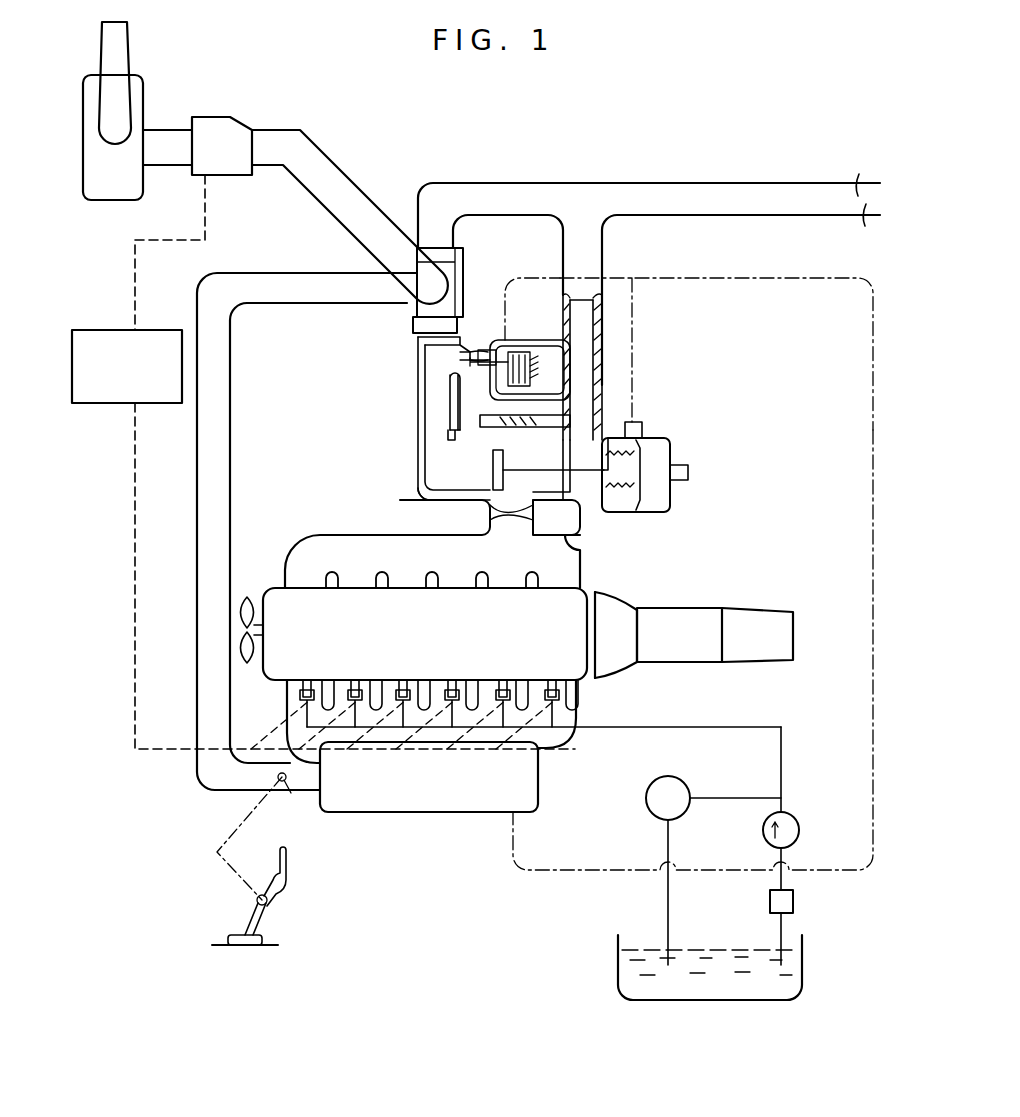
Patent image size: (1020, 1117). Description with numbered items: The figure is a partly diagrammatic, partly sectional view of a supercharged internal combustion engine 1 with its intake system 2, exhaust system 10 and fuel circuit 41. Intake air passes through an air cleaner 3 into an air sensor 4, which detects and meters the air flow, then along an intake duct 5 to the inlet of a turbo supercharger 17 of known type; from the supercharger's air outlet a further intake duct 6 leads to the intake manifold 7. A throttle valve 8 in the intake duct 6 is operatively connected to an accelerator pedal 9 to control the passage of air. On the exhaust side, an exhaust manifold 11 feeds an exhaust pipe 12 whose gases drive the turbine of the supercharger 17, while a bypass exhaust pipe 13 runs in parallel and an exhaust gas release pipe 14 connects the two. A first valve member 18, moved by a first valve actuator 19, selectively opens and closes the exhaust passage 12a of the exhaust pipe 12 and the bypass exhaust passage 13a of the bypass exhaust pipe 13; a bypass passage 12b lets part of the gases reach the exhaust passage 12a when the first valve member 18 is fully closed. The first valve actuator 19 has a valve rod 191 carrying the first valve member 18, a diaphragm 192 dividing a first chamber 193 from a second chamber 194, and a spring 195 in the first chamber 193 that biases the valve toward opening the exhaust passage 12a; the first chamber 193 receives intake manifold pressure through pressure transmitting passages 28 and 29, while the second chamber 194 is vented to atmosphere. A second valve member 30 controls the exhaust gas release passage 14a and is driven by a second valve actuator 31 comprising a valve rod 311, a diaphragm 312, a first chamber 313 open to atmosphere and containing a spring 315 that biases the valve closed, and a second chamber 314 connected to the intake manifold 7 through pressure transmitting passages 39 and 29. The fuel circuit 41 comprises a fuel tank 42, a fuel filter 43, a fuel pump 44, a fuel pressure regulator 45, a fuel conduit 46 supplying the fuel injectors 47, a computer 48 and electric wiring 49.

The supercharged internal combustion engine 1 is at (598, 608).
The intake system 2 is at (572, 748).
The air cleaner 3 is at (100, 123).
The air sensor 4 is at (211, 122).
The intake duct 5 is at (341, 177).
The intake duct 6 is at (232, 488).
The intake manifold 7 is at (440, 812).
The throttle valve 8 is at (284, 783).
The accelerator pedal 9 is at (264, 912).
The exhaust system 10 is at (517, 672).
The exhaust manifold 11 is at (318, 552).
The exhaust pipe 12 is at (425, 462).
The exhaust passage 12a is at (431, 497).
The bypass passage 12b is at (490, 452).
The bypass exhaust pipe 13 is at (603, 405).
The bypass exhaust passage 13a is at (597, 348).
The exhaust gas release pipe 14 is at (450, 400).
The exhaust gas release passage 14a is at (452, 430).
The turbo supercharger 17 is at (466, 272).
The first valve member 18 is at (494, 492).
The first valve actuator 19 is at (659, 467).
The valve rod 191 is at (601, 508).
The diaphragm 192 is at (660, 458).
The first chamber 193 is at (628, 508).
The second chamber 194 is at (688, 470).
The spring 195 is at (632, 428).
The pressure transmitting passage 28 is at (635, 308).
The pressure transmitting passage 29 is at (872, 437).
The second valve member 30 is at (445, 368).
The second valve actuator 31 is at (516, 332).
The valve rod 311 is at (499, 345).
The diaphragm 312 is at (513, 350).
The first chamber 313 is at (528, 372).
The second chamber 314 is at (486, 330).
The spring 315 is at (506, 396).
The pressure transmitting passage 39 is at (553, 277).
The fuel circuit 41 is at (793, 737).
The fuel tank 42 is at (802, 975).
The fuel filter 43 is at (794, 904).
The fuel pump 44 is at (788, 812).
The fuel pressure regulator 45 is at (646, 798).
The fuel conduit 46 is at (661, 729).
The fuel injectors 47 is at (560, 696).
The computer 48 is at (72, 357).
The electric wiring 49 is at (134, 580).